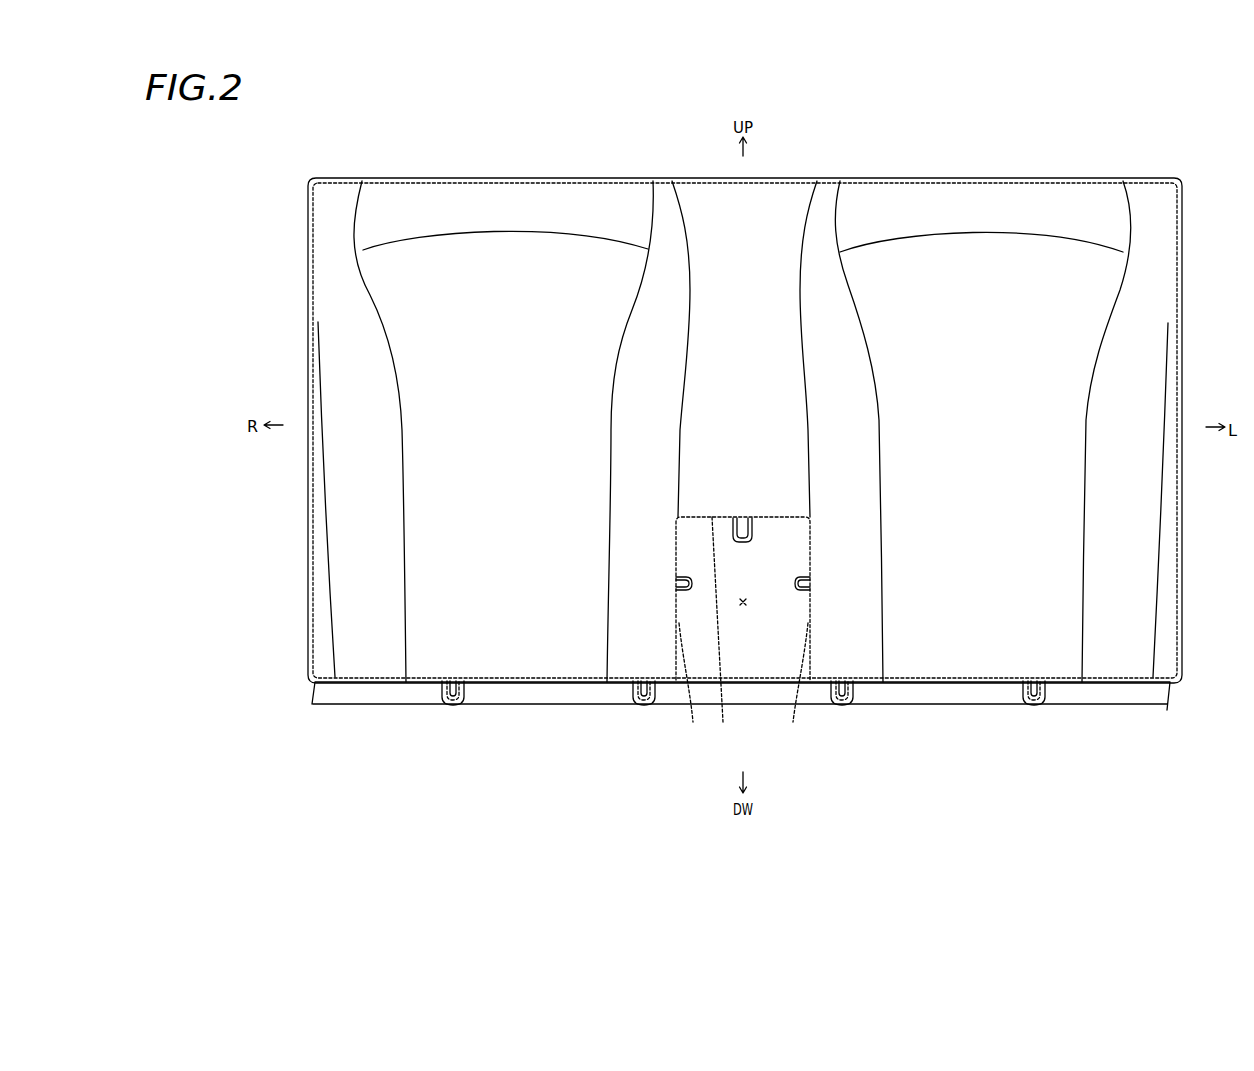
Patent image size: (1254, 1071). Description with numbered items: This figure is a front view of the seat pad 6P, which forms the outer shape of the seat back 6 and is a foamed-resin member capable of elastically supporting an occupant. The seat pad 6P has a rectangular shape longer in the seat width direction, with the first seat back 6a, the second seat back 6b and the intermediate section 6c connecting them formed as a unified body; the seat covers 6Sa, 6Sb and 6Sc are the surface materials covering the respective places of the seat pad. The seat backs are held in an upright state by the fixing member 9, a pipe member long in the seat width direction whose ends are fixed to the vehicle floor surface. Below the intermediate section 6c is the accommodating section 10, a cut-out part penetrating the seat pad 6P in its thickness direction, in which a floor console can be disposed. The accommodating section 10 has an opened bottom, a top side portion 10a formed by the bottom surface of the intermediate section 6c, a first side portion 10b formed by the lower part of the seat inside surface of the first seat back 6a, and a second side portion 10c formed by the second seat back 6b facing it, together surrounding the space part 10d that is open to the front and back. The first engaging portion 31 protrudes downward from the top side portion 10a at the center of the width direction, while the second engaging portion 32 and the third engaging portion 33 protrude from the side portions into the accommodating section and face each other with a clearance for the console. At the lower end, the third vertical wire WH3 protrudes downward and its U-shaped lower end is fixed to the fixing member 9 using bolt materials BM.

The seat back 6 is at (1198, 151).
The first seat back 6a is at (989, 175).
The second seat back 6b is at (518, 175).
The intermediate section 6c is at (774, 175).
The seat pad 6P is at (306, 299).
The seat cover 6Sa is at (995, 420).
The seat cover 6Sb is at (520, 420).
The seat cover 6Sc is at (758, 420).
The fixing member 9 is at (1149, 693).
The accommodating section 10 is at (743, 641).
The top side portion 10a is at (726, 629).
The first side portion 10b is at (793, 682).
The second side portion 10c is at (692, 682).
The space part 10d is at (743, 605).
The first engaging portion 31 is at (743, 544).
The second engaging portion 32 is at (797, 576).
The third engaging portion 33 is at (689, 576).
The bolt material BM is at (466, 705).
The third vertical wire WH3 is at (442, 705).